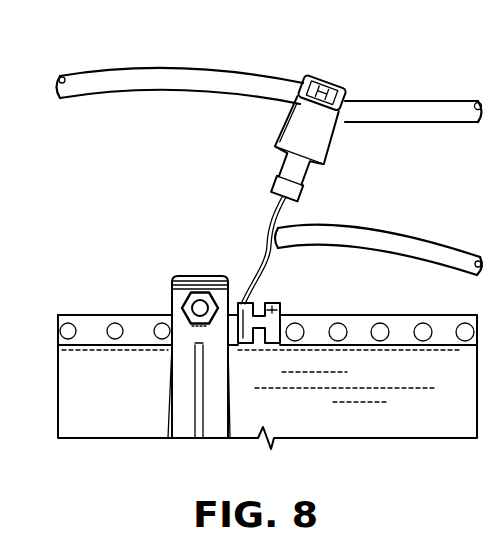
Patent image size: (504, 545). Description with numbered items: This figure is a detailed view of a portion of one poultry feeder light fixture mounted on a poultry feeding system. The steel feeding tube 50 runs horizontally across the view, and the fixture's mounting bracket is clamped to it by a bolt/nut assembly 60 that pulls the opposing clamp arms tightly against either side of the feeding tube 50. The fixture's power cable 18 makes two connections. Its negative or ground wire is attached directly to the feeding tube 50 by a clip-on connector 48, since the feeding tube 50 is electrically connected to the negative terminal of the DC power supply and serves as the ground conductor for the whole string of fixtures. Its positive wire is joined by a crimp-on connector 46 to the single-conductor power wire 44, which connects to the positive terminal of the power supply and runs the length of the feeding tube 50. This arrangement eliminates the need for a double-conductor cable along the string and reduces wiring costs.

The power wire 44 is at (392, 112).
The crimp-on connector 46 is at (275, 130).
The power cable 18 is at (392, 236).
The feeding tube 50 is at (122, 365).
The bolt/nut assembly 60 is at (192, 282).
The clip-on connector 48 is at (270, 303).